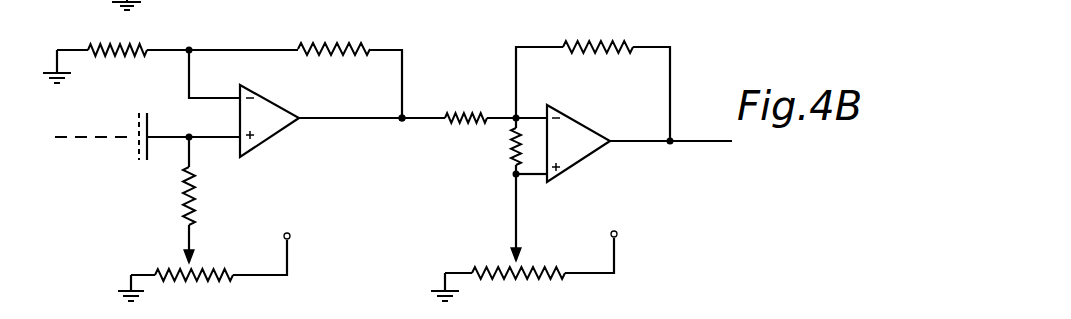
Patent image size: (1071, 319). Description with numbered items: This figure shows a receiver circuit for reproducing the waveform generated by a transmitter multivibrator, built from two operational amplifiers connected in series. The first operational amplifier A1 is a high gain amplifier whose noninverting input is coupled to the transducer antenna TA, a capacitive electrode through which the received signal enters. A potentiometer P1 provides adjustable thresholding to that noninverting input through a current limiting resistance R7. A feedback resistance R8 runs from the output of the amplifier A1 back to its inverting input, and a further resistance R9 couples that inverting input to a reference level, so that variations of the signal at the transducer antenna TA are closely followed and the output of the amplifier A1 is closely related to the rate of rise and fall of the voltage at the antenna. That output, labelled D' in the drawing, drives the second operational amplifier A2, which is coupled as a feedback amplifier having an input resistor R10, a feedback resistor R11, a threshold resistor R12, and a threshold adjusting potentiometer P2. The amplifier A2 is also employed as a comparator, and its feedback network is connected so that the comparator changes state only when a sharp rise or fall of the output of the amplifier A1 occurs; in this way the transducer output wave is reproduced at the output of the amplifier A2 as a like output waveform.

The current limiting resistance R7 is at (186, 197).
The feedback resistance R8 is at (335, 44).
The resistance R9 is at (104, 42).
The input resistor R10 is at (458, 112).
The feedback resistor R11 is at (590, 42).
The threshold resistor R12 is at (511, 146).
The potentiometer P1 is at (202, 265).
The threshold adjusting potentiometer P2 is at (490, 262).
The operational amplifier A1 is at (269, 121).
The operational amplifier A2 is at (578, 143).
The transducer antenna TA is at (134, 125).
The node D prime D' is at (401, 132).